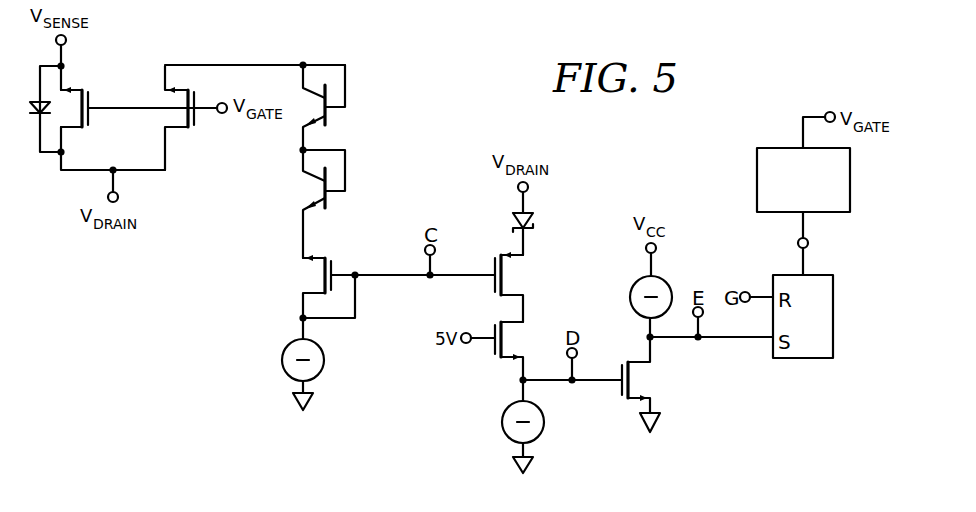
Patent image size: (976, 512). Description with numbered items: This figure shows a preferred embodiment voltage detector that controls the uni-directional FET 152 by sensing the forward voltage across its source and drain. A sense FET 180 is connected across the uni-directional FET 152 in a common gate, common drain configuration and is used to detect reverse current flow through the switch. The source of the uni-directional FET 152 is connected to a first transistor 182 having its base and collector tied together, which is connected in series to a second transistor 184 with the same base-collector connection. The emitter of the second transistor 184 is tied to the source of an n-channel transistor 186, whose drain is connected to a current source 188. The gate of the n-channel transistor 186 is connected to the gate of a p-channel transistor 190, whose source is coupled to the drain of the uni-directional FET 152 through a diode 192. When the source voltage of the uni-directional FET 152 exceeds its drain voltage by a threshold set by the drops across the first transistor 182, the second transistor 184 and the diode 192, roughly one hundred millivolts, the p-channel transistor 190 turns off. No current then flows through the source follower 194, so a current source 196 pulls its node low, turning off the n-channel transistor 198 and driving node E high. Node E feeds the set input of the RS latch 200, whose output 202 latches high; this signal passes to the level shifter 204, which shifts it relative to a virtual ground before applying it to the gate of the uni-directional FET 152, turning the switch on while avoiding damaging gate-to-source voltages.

The uni-directional FET 152 is at (196, 128).
The sense FET 180 is at (90, 93).
The first transistor 182 is at (328, 122).
The second transistor 184 is at (328, 207).
The n-channel transistor 186 is at (335, 262).
The current source 188 is at (281, 361).
The p-channel transistor 190 is at (493, 291).
The diode 192 is at (533, 225).
The source follower 194 is at (494, 356).
The current source 196 is at (501, 423).
The n-channel transistor 198 is at (620, 398).
The RS latch 200 is at (803, 360).
The output 202 is at (809, 243).
The level shifter 204 is at (775, 148).